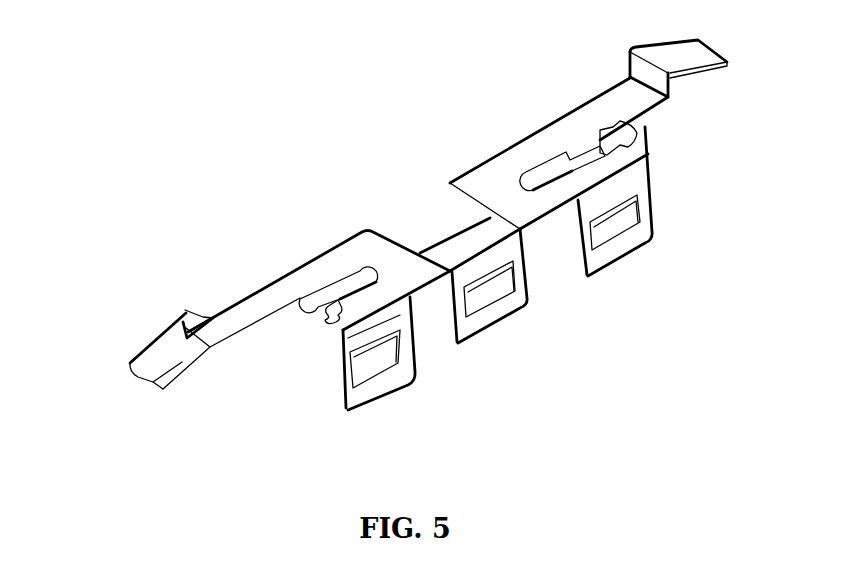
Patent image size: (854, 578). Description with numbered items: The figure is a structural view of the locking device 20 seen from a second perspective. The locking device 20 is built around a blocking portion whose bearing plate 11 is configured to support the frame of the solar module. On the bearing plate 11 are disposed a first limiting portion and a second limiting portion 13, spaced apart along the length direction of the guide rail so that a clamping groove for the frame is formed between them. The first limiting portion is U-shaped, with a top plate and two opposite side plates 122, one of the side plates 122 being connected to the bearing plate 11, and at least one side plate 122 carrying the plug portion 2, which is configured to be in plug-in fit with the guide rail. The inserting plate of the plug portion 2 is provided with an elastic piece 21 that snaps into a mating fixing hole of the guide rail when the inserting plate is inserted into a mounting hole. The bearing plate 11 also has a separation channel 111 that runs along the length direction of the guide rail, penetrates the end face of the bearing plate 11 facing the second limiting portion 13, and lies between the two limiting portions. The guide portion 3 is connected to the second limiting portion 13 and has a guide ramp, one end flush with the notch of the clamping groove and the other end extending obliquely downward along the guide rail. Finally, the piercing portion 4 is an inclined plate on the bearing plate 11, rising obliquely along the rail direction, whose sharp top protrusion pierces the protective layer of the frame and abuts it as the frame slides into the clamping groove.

The locking device 20 is at (200, 157).
The bearing plate 11 is at (373, 257).
The side plate 122 is at (455, 288).
The separation channel 111 is at (322, 322).
The plug portion 2 is at (408, 386).
The elastic piece 21 is at (368, 366).
The guide portion 3 is at (153, 383).
The second limiting portion 13 is at (186, 312).
The piercing portion 4 is at (612, 138).